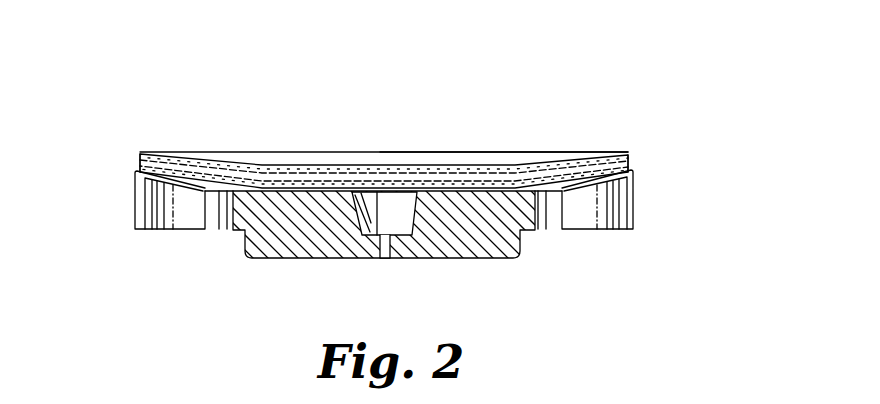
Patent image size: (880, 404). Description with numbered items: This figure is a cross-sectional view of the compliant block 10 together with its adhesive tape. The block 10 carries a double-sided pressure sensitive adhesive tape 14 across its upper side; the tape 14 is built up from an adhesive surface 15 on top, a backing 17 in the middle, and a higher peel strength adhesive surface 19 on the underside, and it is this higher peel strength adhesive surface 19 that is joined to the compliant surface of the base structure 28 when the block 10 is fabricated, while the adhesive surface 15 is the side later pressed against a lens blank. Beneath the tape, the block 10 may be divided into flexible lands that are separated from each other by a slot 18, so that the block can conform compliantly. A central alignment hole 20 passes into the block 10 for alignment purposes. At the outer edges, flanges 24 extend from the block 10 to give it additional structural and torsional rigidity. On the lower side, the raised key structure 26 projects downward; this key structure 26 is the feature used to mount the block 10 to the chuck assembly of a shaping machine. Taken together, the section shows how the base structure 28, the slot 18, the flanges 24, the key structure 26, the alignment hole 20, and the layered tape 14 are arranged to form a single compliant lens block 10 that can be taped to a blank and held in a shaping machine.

The compliant block 10 is at (510, 88).
The double-sided pressure sensitive adhesive tape 14 is at (216, 154).
The adhesive surface 15 is at (619, 160).
The backing 17 is at (142, 163).
The slot 18 is at (210, 210).
The higher peel strength adhesive surface 19 is at (630, 165).
The central alignment hole 20 is at (386, 258).
The flanges 24 is at (636, 197).
The raised key structure 26 is at (247, 249).
The base structure 28 is at (134, 210).